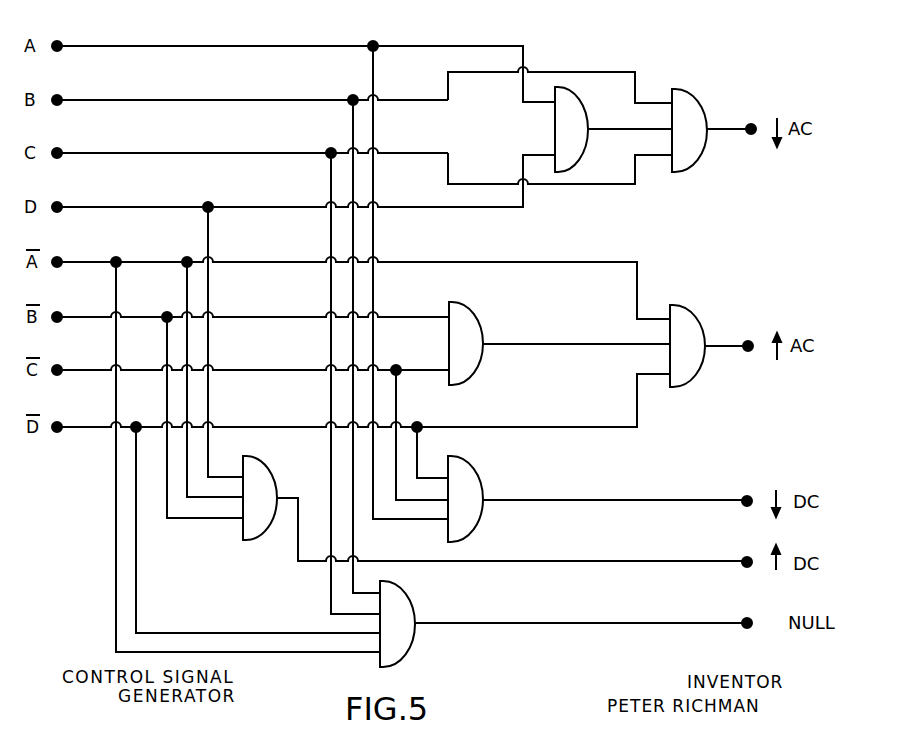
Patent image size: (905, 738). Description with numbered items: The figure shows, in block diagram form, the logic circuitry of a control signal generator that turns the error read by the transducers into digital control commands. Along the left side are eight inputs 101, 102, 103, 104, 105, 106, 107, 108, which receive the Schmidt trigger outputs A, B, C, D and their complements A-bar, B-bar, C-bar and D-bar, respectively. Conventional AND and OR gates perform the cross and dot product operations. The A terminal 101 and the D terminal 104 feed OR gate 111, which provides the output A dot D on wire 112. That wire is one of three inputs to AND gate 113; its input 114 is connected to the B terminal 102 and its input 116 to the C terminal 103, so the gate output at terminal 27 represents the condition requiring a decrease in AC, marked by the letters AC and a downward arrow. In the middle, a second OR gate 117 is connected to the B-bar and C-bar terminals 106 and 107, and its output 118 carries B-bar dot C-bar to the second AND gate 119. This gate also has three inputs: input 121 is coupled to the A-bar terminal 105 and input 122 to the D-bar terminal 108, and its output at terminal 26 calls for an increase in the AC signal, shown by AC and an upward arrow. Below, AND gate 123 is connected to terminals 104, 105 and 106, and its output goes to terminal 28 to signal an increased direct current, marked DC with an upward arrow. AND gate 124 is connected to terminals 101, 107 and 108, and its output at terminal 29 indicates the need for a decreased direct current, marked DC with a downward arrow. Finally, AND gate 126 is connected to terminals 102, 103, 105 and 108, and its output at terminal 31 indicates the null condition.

The input terminal A 101 is at (59, 44).
The input terminal B 102 is at (59, 98).
The input terminal C 103 is at (59, 151).
The input terminal D 104 is at (60, 205).
The input terminal A-bar 105 is at (60, 260).
The input terminal B-bar 106 is at (60, 315).
The input terminal C-bar 107 is at (60, 368).
The input terminal D-bar 108 is at (60, 425).
The OR gate 111 is at (585, 105).
The wire 112 is at (612, 133).
The AND gate 113 is at (690, 100).
The input 114 is at (652, 103).
The input 116 is at (656, 160).
The second OR gate 117 is at (480, 325).
The output 118 is at (551, 349).
The second AND gate 119 is at (695, 318).
The input 121 is at (565, 265).
The input 122 is at (637, 413).
The AND gate 123 is at (272, 480).
The AND gate 124 is at (473, 507).
The AND gate 126 is at (417, 604).
The terminal 27 is at (751, 126).
The terminal 26 is at (748, 352).
The terminal 29 is at (745, 497).
The terminal 28 is at (742, 558).
The terminal 31 is at (745, 618).